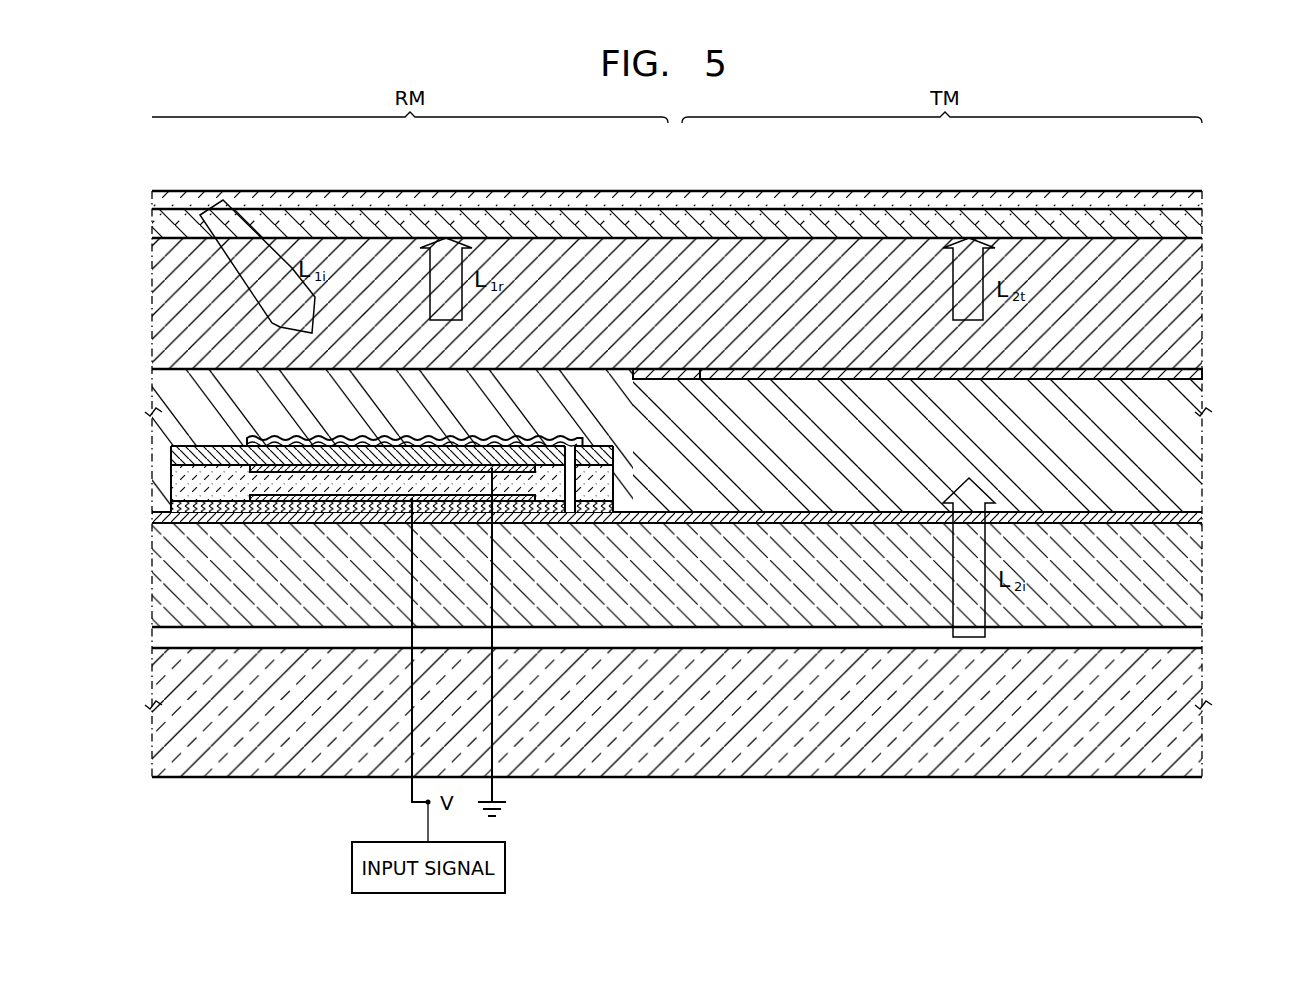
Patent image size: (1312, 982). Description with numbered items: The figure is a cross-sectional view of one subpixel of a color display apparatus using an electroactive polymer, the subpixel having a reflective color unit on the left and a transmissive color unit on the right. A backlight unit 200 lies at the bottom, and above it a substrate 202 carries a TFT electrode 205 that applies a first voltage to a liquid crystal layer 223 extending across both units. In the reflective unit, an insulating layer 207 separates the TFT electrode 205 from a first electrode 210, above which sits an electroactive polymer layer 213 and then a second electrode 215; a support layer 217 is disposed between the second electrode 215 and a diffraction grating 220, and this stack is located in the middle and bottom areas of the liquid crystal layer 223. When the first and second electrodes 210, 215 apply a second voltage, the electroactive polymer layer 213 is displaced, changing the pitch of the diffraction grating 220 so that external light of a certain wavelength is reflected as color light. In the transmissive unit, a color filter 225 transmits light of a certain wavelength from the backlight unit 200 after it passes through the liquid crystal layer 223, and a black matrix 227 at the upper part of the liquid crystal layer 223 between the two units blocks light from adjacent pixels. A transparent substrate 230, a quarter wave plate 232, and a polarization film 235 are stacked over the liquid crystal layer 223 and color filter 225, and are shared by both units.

The backlight unit 200 is at (1195, 683).
The substrate 202 is at (1195, 583).
The TFT electrode 205 is at (175, 518).
The insulating layer 207 is at (178, 507).
The first electrode 210 is at (250, 497).
The electroactive polymer layer 213 is at (177, 476).
The second electrode 215 is at (252, 464).
The support layer 217 is at (180, 452).
The diffraction grating 220 is at (247, 440).
The liquid crystal layer 223 is at (1195, 450).
The color filter 225 is at (1195, 378).
The black matrix 227 is at (673, 373).
The transparent substrate 230 is at (905, 265).
The quarter wave plate 232 is at (1033, 222).
The polarization film 235 is at (1083, 200).